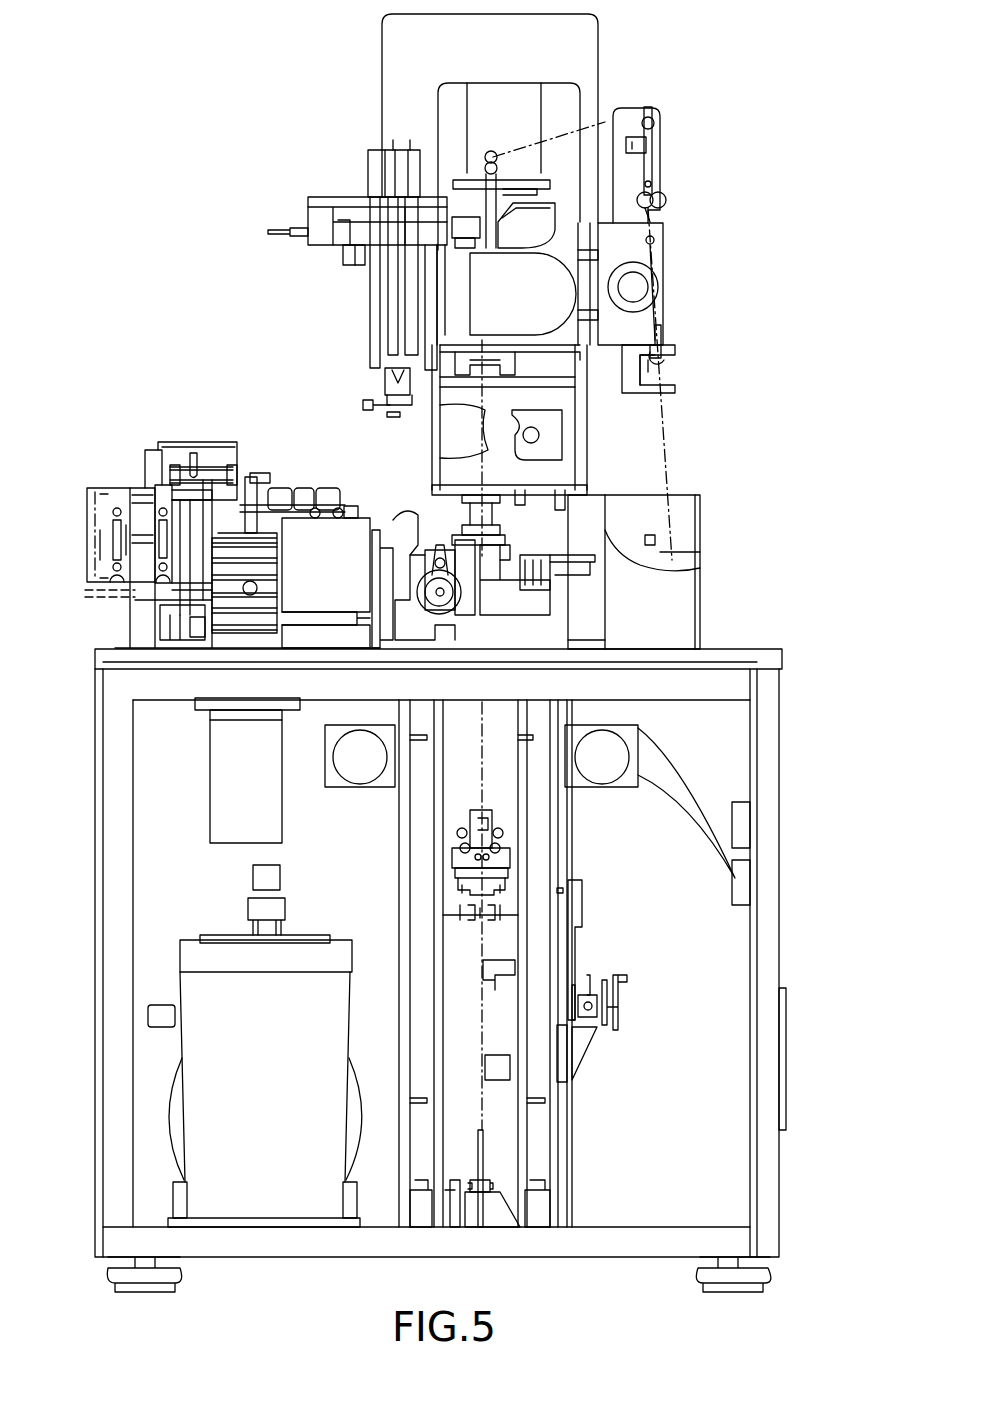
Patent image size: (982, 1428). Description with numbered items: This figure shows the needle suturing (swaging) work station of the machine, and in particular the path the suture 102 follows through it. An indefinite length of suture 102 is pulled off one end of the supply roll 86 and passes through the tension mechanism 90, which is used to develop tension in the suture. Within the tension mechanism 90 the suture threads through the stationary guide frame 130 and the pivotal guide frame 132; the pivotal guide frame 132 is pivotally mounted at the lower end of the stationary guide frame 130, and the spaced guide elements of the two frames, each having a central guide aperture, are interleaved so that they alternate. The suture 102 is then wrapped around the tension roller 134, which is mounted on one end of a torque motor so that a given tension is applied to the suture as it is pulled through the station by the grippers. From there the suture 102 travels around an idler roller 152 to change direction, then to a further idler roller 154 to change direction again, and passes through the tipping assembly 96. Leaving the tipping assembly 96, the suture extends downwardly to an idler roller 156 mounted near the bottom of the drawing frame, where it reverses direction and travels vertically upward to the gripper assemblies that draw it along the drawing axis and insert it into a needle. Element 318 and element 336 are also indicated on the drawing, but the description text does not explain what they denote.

The tension mechanism 90 is at (748, 140).
The tipping assembly 96 is at (334, 190).
The suture 102 is at (553, 140).
The idler roller 154 is at (486, 158).
The idler roller 152 is at (652, 123).
The thread tension rollers 318 is at (653, 183).
The tension roller 134 is at (645, 292).
The stationary guide frame 130 is at (660, 340).
The pivotal guide frame 132 is at (643, 332).
The rotary hook wheel 336 is at (445, 535).
The suture supply 86 is at (675, 560).
The idler roller 156 is at (475, 1192).